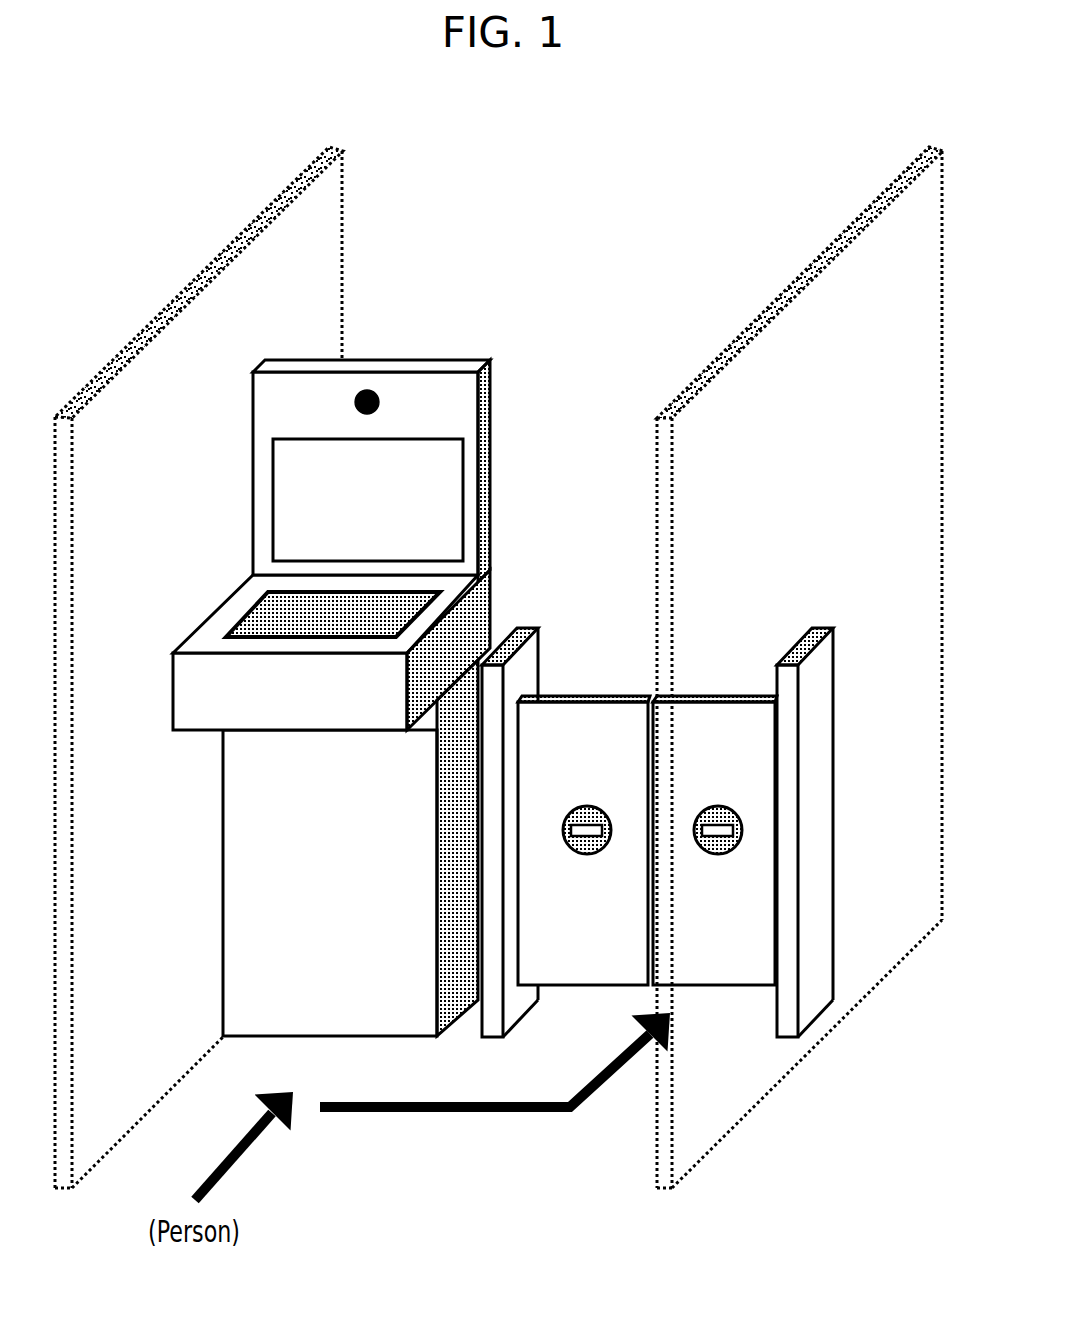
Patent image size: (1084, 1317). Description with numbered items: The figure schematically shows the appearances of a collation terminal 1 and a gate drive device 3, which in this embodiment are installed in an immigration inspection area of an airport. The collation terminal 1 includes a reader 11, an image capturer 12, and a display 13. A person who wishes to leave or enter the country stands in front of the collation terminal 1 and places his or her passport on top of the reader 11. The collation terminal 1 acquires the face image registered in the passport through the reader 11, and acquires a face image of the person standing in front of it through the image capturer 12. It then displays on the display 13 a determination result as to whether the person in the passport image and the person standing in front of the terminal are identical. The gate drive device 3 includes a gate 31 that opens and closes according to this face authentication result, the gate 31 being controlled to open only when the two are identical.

The collation terminal 1 is at (316, 637).
The reader 11 is at (262, 622).
The image capturer 12 is at (376, 393).
The display 13 is at (292, 513).
The gate drive device 3 is at (657, 795).
The gate 31 is at (581, 735).